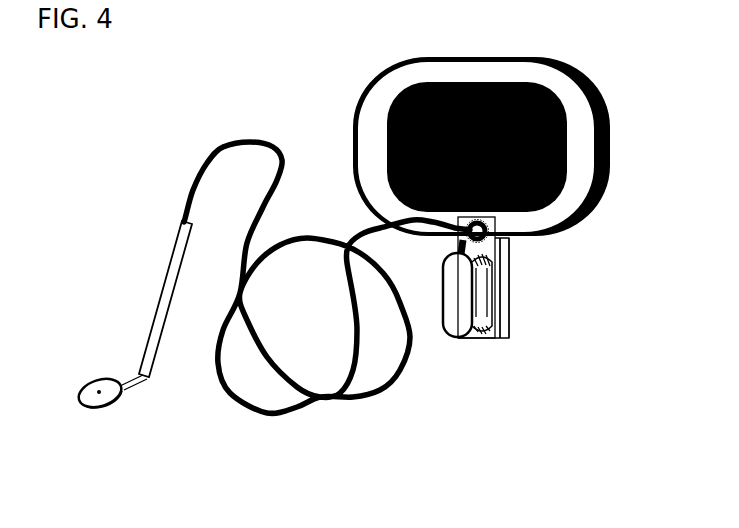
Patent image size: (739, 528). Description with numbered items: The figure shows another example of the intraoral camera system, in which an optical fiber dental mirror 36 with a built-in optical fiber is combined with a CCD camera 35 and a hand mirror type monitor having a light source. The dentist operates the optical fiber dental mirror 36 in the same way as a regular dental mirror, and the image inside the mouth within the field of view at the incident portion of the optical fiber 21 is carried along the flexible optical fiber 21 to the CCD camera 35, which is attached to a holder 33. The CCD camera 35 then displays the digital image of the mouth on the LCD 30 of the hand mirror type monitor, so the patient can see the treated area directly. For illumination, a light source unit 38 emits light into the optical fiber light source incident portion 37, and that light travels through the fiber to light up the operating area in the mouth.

The optical fiber 21 is at (208, 160).
The LCD 30 is at (398, 100).
The holder 33 is at (502, 292).
The CCD camera 35 is at (488, 238).
The optical fiber dental mirror 36 is at (158, 298).
The optical fiber light source incident portion 37 is at (492, 242).
The light source unit 38 is at (487, 337).